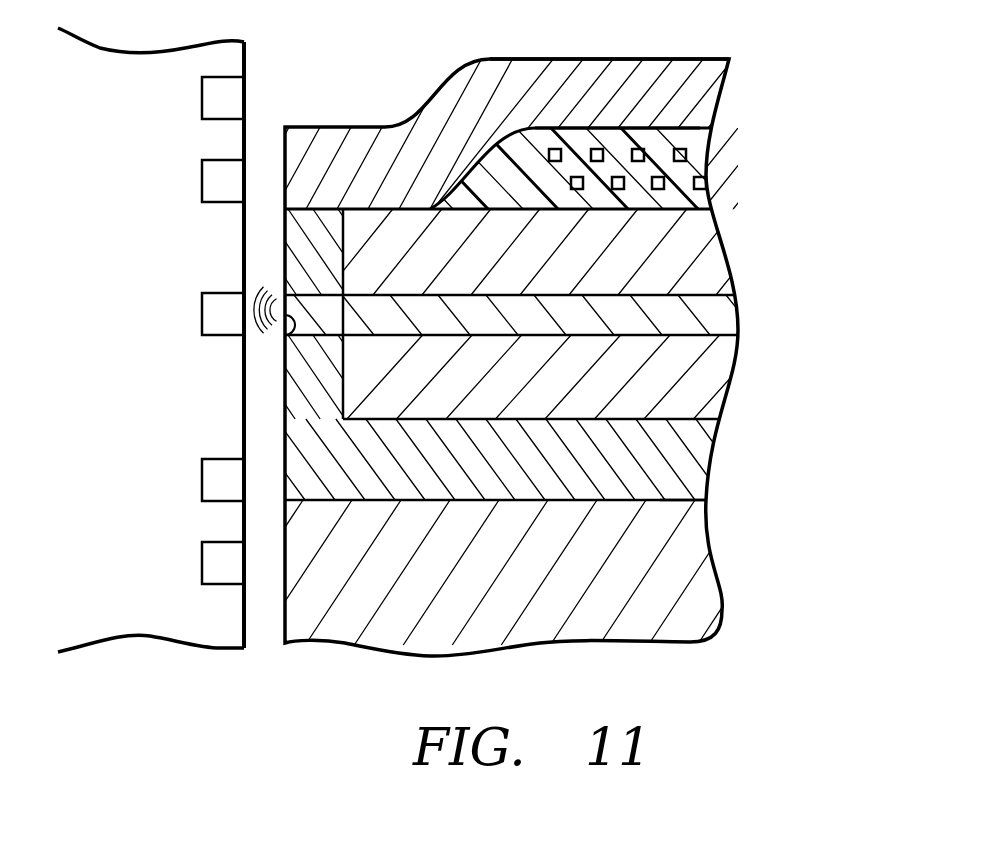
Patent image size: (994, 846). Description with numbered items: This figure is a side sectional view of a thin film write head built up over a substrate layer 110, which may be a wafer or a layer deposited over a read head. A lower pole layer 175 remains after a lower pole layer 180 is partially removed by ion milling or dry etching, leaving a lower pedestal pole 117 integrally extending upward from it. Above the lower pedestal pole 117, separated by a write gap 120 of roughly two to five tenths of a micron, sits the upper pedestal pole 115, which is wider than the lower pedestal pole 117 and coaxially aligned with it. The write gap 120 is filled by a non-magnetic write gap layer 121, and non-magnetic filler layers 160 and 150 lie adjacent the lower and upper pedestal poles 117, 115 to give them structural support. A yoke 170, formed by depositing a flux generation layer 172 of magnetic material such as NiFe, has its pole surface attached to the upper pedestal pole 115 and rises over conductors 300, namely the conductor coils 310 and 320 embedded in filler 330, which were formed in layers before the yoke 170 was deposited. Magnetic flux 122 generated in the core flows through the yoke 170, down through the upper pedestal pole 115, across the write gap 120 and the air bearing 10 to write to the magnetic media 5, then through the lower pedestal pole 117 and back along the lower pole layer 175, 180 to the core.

The magnetic media 5 is at (141, 621).
The air bearing 10 is at (266, 621).
The substrate layer 110 is at (697, 568).
The upper pedestal pole 115 is at (313, 232).
The lower pedestal pole 117 is at (313, 373).
The write gap 120 is at (303, 338).
The write gap layer 121 is at (712, 318).
The magnetic flux 122 is at (258, 290).
The filler layer 150 is at (712, 257).
The filler layer 160 is at (712, 374).
The yoke 170 is at (338, 135).
The flux generation layer 172 is at (671, 62).
The lower pole layer 175 is at (697, 445).
The lower pole layer 180 is at (695, 486).
The conductors 300 is at (722, 166).
The conductor coil 310 is at (670, 195).
The conductor coil 320 is at (683, 142).
The filler material 330 is at (578, 140).